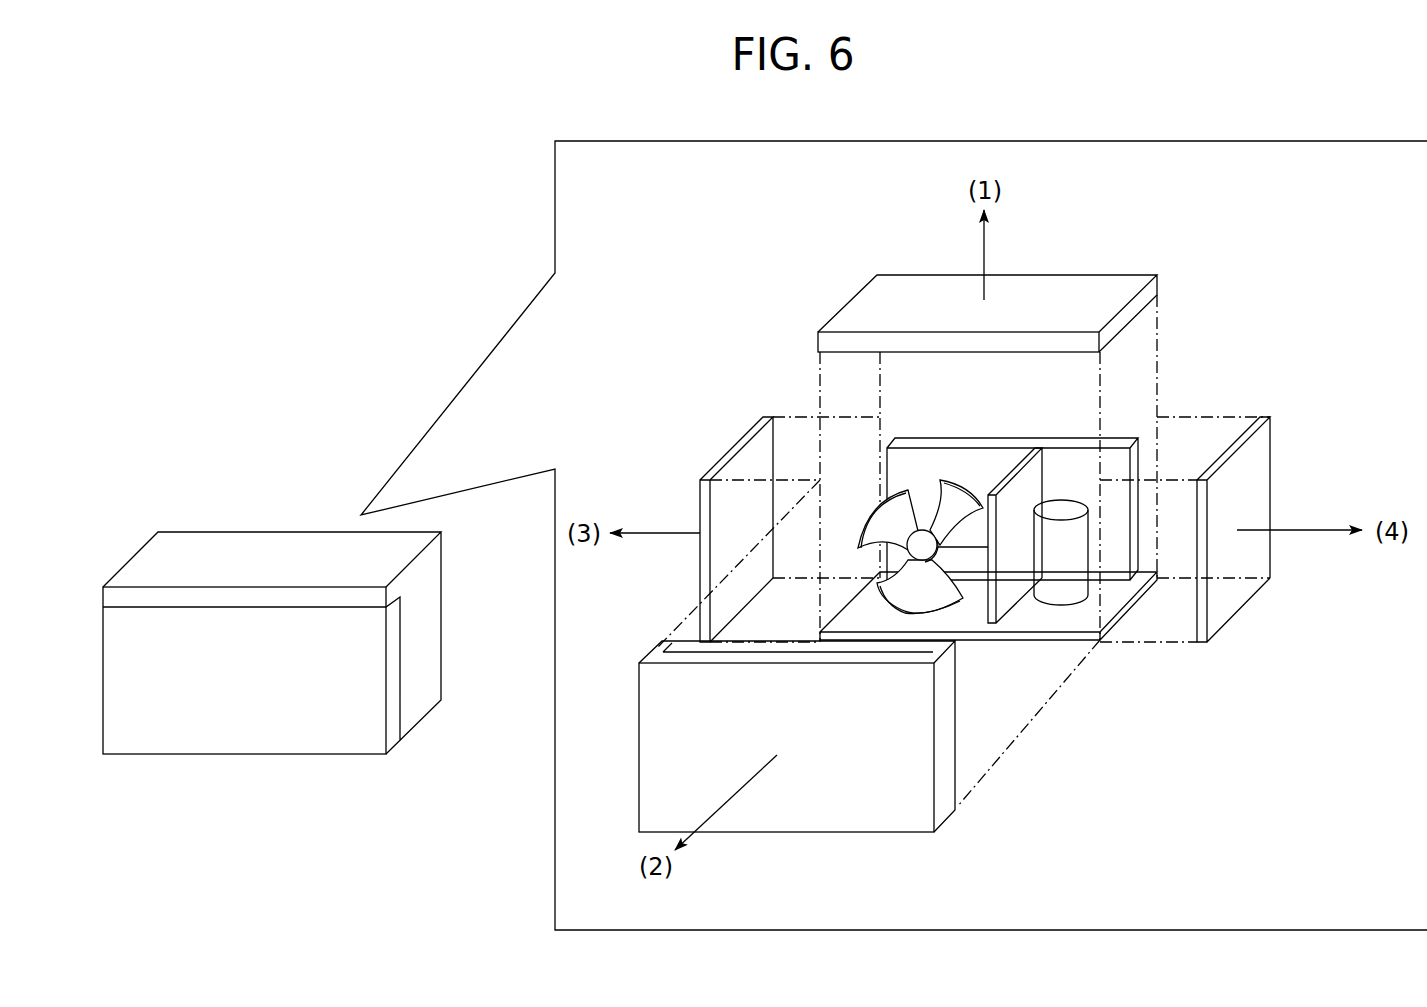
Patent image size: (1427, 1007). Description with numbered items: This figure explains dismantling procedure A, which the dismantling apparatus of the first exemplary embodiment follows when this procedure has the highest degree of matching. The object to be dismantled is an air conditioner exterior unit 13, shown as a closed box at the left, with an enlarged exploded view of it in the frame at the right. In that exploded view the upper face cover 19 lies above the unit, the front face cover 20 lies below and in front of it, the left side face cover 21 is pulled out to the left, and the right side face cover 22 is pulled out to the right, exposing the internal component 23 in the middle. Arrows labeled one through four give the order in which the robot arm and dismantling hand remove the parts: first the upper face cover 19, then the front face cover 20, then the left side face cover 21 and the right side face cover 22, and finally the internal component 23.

The air conditioner exterior unit 13 is at (259, 544).
The upper face cover 19 is at (1075, 283).
The front face cover 20 is at (880, 823).
The left side face cover 21 is at (736, 437).
The right side face cover 22 is at (1265, 456).
The internal component 23 is at (923, 475).